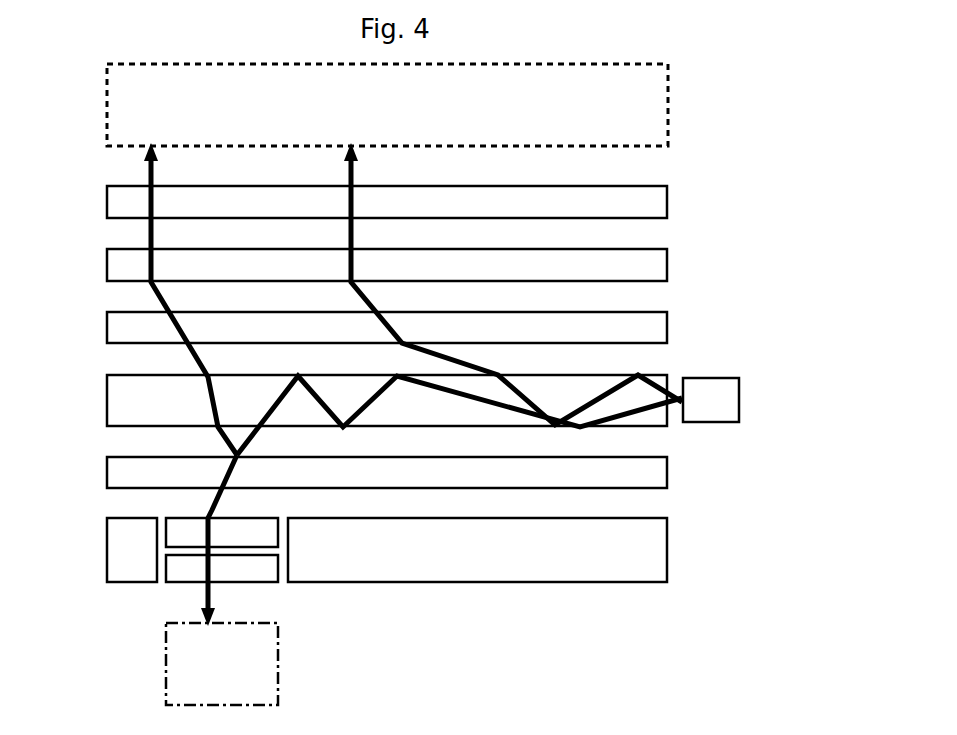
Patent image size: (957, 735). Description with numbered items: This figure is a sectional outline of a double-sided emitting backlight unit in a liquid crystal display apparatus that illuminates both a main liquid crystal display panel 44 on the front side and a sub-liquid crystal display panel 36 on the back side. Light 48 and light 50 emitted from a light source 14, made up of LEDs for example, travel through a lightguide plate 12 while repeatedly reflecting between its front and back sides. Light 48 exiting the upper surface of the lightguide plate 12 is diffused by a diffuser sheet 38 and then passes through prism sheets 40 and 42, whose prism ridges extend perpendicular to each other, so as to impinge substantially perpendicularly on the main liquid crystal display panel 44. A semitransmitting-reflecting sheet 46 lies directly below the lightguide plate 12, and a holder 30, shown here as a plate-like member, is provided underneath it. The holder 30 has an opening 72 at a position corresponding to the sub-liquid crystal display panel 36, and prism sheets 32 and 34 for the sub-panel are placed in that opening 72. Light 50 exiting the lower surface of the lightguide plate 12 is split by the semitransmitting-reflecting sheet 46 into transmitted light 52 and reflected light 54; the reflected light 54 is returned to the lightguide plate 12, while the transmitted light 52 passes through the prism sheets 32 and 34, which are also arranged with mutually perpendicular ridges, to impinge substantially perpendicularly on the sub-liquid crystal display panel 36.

The lightguide plate 12 is at (590, 385).
The light source 14 is at (708, 387).
The holder 30 is at (650, 555).
The prism sheet 32 is at (267, 530).
The prism sheet 34 is at (255, 570).
The sub-liquid crystal display panel 36 is at (257, 668).
The diffuser sheet 38 is at (647, 328).
The prism sheet 40 is at (658, 265).
The prism sheet 42 is at (657, 202).
The main liquid crystal display panel 44 is at (652, 104).
The semitransmitting-reflecting sheet 46 is at (647, 473).
The light 48 is at (352, 203).
The light 50 is at (492, 403).
The transmitted light 52 is at (208, 498).
The reflected light 54 is at (205, 390).
The opening 72 is at (158, 593).